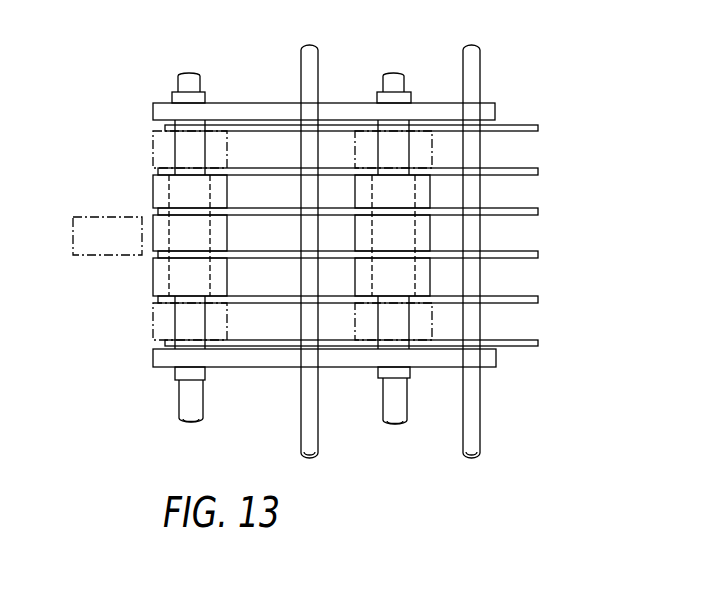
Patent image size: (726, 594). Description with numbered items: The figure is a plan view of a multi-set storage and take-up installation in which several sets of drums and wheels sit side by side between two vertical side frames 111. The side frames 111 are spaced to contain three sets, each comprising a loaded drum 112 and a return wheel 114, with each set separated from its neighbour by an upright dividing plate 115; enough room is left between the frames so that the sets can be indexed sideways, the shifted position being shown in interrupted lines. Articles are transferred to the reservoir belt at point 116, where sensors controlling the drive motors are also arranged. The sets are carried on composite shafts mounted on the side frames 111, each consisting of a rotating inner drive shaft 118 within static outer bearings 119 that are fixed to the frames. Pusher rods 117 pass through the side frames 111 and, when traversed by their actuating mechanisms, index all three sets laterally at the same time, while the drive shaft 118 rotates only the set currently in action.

The vertical side frame 111 is at (447, 110).
The loaded drum 112 is at (423, 238).
The return wheel 114 is at (157, 192).
The upright dividing plate 115 is at (537, 172).
The transfer point 116 is at (83, 242).
The pusher rod 117 is at (472, 438).
The inner drive shaft 118 is at (185, 78).
The outer bearing 119 is at (194, 99).